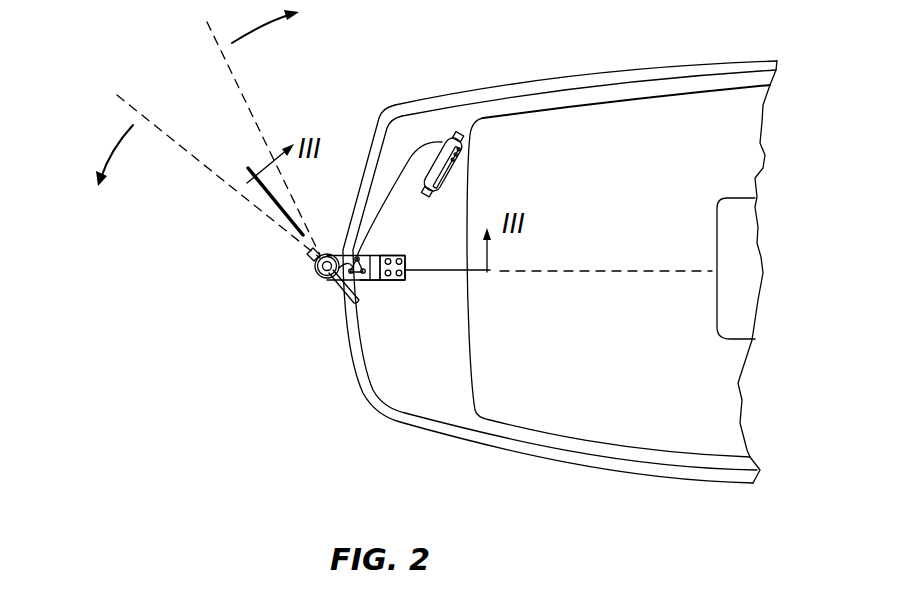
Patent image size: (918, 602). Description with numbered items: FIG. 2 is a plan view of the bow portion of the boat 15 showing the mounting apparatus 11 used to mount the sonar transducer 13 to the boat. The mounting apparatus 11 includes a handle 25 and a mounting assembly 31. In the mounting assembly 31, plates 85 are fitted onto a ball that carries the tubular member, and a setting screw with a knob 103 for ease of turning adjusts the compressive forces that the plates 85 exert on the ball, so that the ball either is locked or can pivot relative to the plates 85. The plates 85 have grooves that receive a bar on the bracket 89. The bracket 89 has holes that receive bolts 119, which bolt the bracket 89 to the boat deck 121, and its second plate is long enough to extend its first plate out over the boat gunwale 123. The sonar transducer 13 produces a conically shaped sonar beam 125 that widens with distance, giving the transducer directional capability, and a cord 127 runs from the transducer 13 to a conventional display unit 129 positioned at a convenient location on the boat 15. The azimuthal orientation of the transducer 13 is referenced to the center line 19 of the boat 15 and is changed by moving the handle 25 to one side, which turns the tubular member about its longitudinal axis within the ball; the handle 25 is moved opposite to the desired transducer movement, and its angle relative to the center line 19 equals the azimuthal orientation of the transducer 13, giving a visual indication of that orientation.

The mounting apparatus 11 is at (289, 311).
The sonar transducer 13 is at (298, 262).
The boat 15 is at (663, 68).
The center line 19 is at (612, 270).
The handle 25 is at (343, 281).
The mounting assembly 31 is at (310, 275).
The plates 85 is at (382, 281).
The bracket 89 is at (407, 257).
The knob 103 is at (373, 282).
The bolts 119 is at (405, 278).
The boat deck 121 is at (450, 415).
The boat gunwale 123 is at (366, 391).
The conically shaped sonar beam 125 is at (247, 100).
The cord 127 is at (423, 147).
The display unit 129 is at (462, 145).